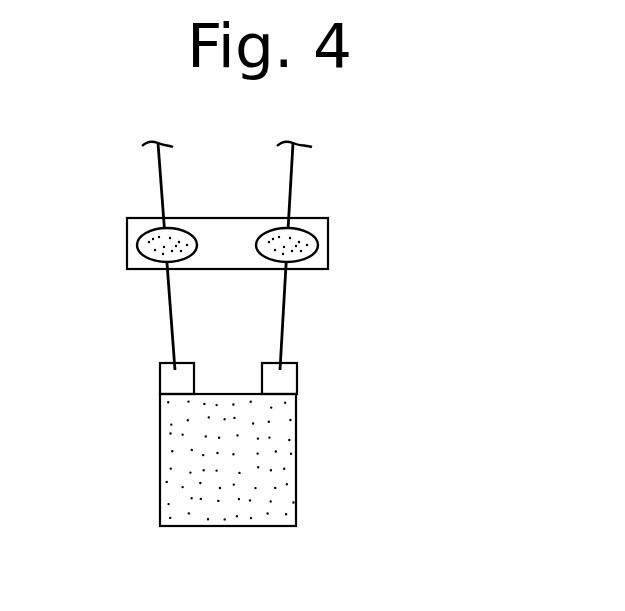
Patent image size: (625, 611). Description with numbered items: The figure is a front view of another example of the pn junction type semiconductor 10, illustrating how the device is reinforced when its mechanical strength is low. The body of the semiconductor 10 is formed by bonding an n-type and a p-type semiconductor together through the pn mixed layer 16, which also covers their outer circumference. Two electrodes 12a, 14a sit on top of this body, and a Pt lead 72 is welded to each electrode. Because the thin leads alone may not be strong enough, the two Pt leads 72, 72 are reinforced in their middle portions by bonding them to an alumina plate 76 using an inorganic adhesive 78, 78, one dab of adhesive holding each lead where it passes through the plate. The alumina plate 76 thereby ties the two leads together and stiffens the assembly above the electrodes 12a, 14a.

The pn junction type semiconductor 10 is at (370, 443).
The electrode 12a is at (160, 378).
The electrode 14a is at (297, 383).
The pn mixed layer 16 is at (213, 522).
The Pt leads 72 is at (168, 307).
The alumina plate 76 is at (225, 228).
The inorganic adhesive 78 is at (137, 245).